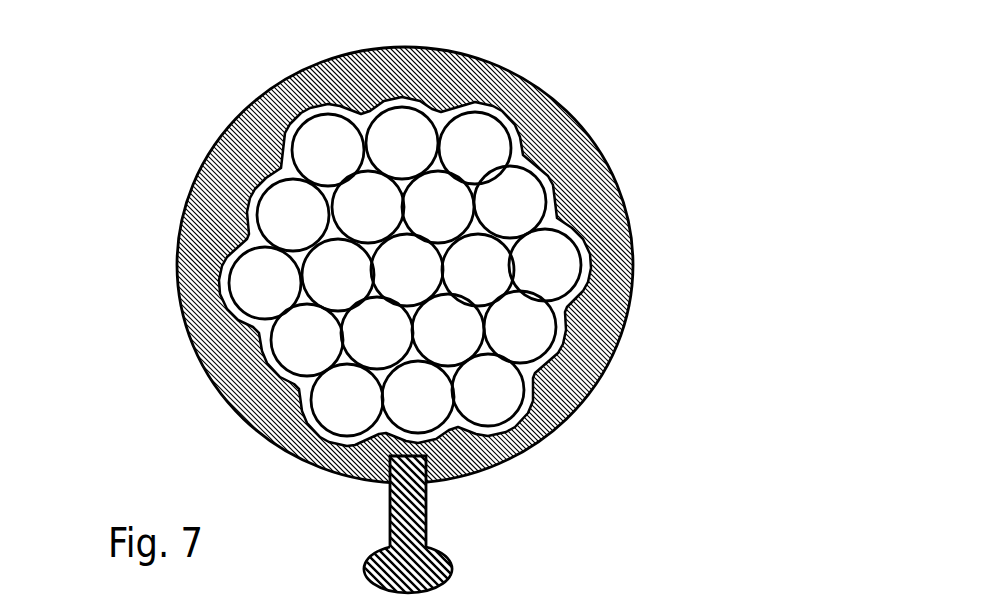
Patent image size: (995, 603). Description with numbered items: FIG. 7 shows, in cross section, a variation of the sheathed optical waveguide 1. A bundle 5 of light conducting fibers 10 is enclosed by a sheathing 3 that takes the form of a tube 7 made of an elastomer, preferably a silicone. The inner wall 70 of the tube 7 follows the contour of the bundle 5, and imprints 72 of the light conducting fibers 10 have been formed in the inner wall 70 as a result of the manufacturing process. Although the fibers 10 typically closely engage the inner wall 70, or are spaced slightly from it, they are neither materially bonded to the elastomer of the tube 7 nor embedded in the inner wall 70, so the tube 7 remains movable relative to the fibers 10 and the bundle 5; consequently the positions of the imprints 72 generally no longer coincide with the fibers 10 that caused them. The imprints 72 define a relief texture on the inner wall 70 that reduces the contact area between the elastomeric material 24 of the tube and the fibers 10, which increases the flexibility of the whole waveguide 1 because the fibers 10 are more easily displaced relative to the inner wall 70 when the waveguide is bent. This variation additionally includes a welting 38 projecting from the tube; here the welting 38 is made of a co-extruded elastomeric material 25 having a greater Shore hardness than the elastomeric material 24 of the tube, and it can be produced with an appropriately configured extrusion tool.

The sheathed optical waveguide 1 is at (89, 447).
The sheathing 3 is at (223, 137).
The tube 7 is at (223, 137).
The bundle 5 is at (256, 326).
The light conducting fibers 10 is at (267, 285).
The elastomeric material 24 is at (585, 354).
The elastomeric material 25 is at (415, 515).
The welting 38 is at (455, 570).
The inner wall 70 is at (318, 126).
The imprints 72 is at (288, 372).